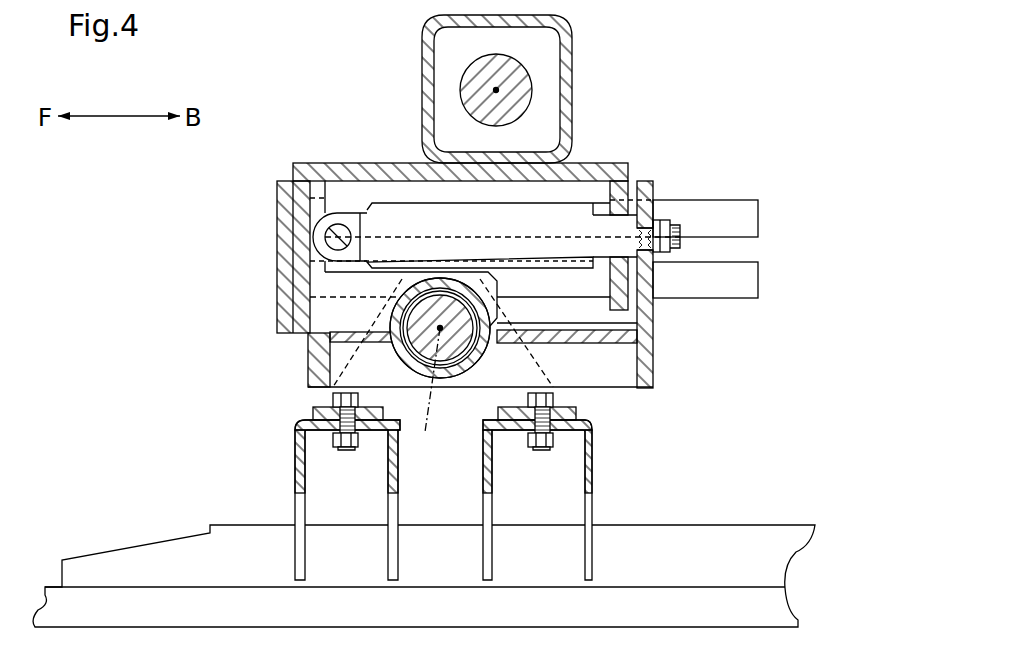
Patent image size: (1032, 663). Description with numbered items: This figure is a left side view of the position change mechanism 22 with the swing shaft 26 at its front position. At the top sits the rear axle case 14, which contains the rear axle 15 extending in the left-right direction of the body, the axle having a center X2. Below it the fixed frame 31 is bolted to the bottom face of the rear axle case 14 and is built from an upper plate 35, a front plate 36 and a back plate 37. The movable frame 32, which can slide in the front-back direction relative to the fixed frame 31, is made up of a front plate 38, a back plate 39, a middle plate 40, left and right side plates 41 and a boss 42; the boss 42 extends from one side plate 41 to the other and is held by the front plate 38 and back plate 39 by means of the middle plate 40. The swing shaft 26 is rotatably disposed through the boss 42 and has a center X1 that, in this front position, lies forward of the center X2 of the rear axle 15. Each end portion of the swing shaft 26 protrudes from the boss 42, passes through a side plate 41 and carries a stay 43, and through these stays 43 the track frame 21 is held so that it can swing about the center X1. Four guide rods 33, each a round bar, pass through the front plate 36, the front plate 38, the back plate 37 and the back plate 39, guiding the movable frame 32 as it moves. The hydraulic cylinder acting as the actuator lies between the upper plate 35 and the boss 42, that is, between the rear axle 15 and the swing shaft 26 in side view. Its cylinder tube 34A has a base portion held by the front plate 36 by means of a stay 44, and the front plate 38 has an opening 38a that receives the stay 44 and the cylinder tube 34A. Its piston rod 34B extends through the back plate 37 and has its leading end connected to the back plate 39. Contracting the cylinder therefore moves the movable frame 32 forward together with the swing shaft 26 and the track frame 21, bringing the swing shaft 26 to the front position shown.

The rear axle case 14 is at (423, 84).
The rear axle 15 is at (498, 88).
The center of the rear axle X2 is at (536, 80).
The track frame 21 is at (798, 547).
The position change mechanism 22 is at (774, 144).
The swing shaft 26 is at (418, 345).
The fixed frame 31 is at (469, 300).
The movable frame 32 is at (656, 390).
The guide rods 33 is at (750, 277).
The cylinder tube 34A is at (378, 207).
The piston rod 34B is at (616, 226).
The upper plate 35 is at (588, 170).
The front plate 36 is at (298, 250).
The back plate 37 is at (623, 303).
The front plate 38 is at (315, 350).
The opening 38a is at (315, 327).
The back plate 39 is at (652, 352).
The middle plate 40 is at (607, 343).
The side plates 41 is at (520, 297).
The boss 42 is at (477, 363).
The stay 43 is at (468, 408).
The stay 44 is at (318, 218).
The center of the swing shaft X1 is at (419, 391).